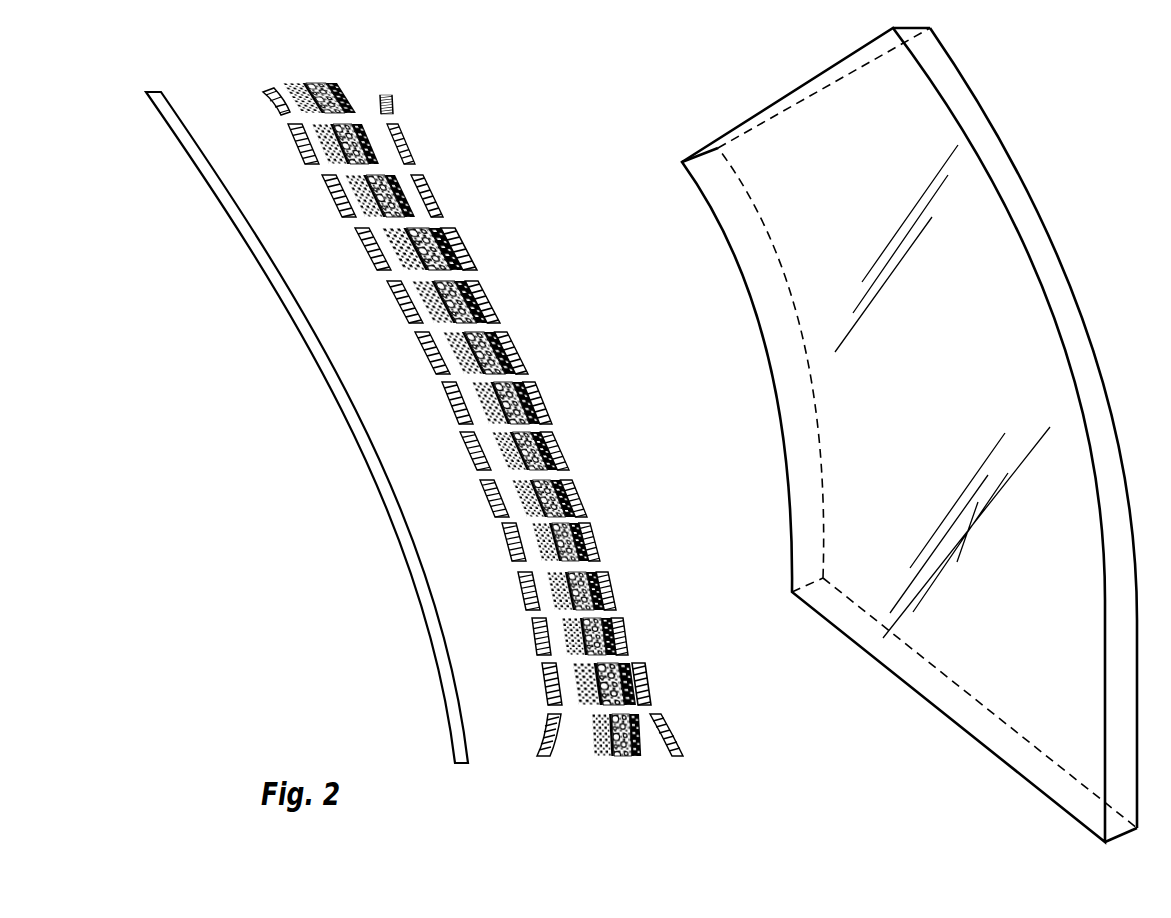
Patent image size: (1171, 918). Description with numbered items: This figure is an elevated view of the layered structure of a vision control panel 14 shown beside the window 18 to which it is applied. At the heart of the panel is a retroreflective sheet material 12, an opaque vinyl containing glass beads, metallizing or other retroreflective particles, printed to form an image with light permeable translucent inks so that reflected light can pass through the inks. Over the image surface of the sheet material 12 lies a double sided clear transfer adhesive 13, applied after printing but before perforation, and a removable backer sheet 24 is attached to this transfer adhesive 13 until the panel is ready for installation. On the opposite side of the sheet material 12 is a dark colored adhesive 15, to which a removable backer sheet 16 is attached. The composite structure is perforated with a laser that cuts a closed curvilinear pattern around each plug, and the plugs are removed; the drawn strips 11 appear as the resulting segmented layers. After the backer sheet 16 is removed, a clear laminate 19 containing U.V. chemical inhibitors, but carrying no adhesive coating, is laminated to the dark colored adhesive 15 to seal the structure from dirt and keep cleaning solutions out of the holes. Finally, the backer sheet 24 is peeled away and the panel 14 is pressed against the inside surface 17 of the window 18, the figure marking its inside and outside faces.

The hatched strip layers 11 is at (505, 324).
The retroreflective sheet material 12 is at (318, 81).
The double sided clear transfer adhesive 13 is at (643, 762).
The vision control panel 14 is at (500, 113).
The dark colored adhesive 15 is at (592, 762).
The removable backer sheet 16 is at (506, 557).
The inside surface 17 is at (743, 345).
The window 18 is at (1130, 838).
The clear laminate 19 is at (305, 348).
The removable backer sheet 24 is at (690, 755).